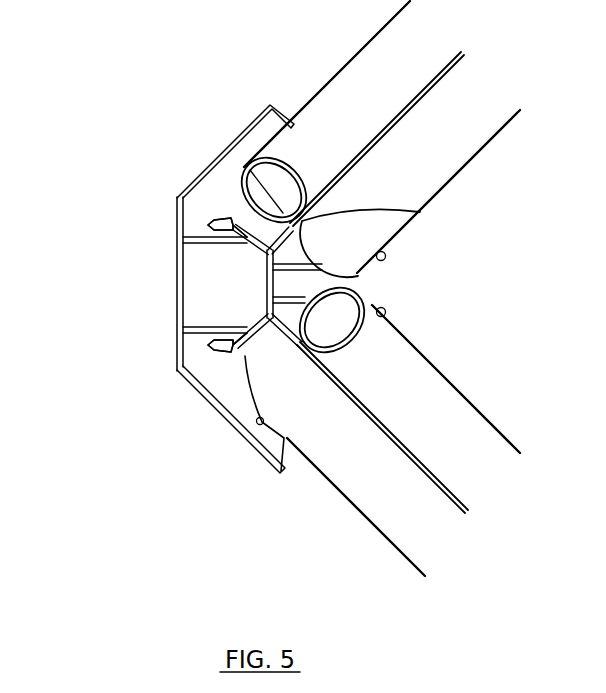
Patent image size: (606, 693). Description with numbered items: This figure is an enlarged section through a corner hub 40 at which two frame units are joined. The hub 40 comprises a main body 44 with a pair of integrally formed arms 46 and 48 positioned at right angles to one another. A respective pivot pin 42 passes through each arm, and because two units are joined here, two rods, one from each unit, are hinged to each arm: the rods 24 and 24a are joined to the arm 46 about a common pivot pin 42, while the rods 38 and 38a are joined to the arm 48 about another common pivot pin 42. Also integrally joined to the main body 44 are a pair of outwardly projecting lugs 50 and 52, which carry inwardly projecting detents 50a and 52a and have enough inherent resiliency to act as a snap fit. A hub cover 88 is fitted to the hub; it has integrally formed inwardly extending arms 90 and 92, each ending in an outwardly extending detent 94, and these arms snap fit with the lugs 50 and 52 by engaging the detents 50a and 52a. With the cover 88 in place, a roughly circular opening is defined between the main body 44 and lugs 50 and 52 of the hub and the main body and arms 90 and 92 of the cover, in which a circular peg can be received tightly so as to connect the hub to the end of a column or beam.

The rod 24 is at (460, 127).
The rod 24a is at (332, 115).
The rod 38 is at (428, 395).
The rod 38a is at (370, 495).
The corner hub 40 is at (244, 163).
The pivot pin 42 is at (388, 311).
The main body 44 is at (266, 283).
The arm 46 is at (395, 209).
The arm 48 is at (323, 471).
The lug 50 is at (250, 318).
The detent 50a is at (222, 403).
The lug 52 is at (247, 250).
The detent 52a is at (203, 223).
The hub cover 88 is at (166, 195).
The arm 90 is at (190, 379).
The arm 92 is at (192, 192).
The detent 94 is at (236, 218).